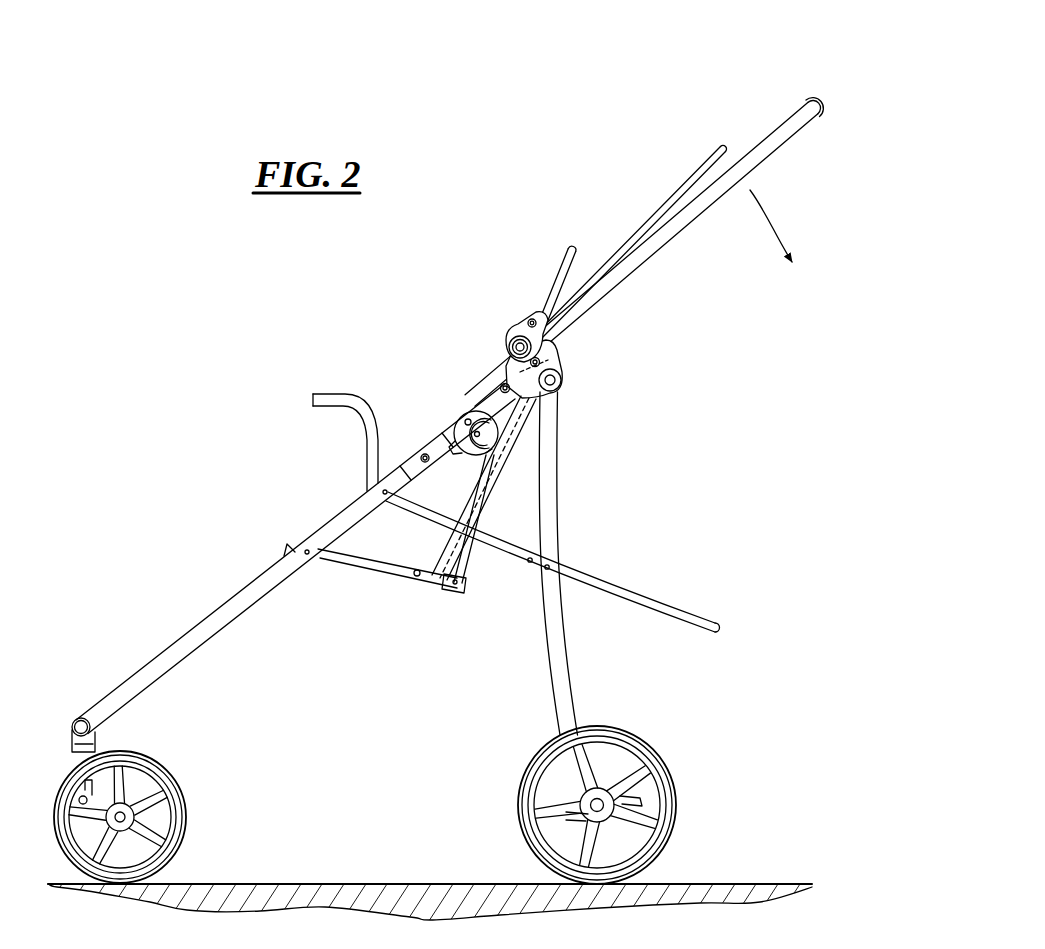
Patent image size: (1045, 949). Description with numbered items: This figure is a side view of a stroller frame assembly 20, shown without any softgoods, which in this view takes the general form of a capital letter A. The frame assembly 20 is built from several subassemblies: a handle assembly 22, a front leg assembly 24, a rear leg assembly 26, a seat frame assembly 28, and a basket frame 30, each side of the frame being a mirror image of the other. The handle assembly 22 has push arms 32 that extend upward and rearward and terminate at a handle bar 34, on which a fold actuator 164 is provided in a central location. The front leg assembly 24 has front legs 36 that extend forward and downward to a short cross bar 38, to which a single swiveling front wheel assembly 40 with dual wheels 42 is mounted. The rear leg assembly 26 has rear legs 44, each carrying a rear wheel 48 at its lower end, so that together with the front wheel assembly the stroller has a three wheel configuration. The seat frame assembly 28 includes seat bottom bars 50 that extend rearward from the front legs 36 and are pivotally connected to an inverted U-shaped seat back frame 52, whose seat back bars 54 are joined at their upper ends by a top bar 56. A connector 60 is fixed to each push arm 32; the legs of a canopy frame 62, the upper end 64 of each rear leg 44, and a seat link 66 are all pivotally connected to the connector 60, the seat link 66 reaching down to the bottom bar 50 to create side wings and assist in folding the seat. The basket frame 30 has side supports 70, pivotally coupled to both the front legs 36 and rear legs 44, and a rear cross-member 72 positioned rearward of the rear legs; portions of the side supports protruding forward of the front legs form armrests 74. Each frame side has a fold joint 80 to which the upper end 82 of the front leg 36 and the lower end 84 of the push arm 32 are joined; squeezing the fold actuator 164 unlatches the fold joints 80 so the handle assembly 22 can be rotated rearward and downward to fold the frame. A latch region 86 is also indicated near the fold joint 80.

The frame assembly 20 is at (196, 316).
The handle assembly 22 is at (660, 259).
The front leg assembly 24 is at (234, 638).
The rear leg assembly 26 is at (570, 668).
The seat frame assembly 28 is at (377, 594).
The basket frame 30 is at (652, 593).
The push arm 32 is at (703, 218).
The handle bar 34 is at (798, 105).
The front leg 36 is at (197, 630).
The short cross bar 38 is at (78, 716).
The front wheel assembly 40 is at (74, 744).
The dual wheels 42 is at (183, 830).
The rear leg 44 is at (549, 623).
The rear wheel 48 is at (676, 806).
The seat bottom bar 50 is at (331, 566).
The seat back frame 52 is at (494, 502).
The seat back bar 54 is at (472, 558).
The top bar 56 is at (575, 248).
The connector 60 is at (557, 372).
The canopy frame 62 is at (698, 166).
The upper end of rear leg 64 is at (562, 385).
The seat link 66 is at (445, 457).
The side support 70 is at (592, 586).
The rear cross-member 72 is at (722, 628).
The armrest 74 is at (344, 394).
The fold joint 80 is at (466, 414).
The upper end of front leg 82 is at (392, 470).
The lower end of push arm 84 is at (527, 336).
The latch lever 86 is at (462, 470).
The fold actuator 164 is at (820, 105).